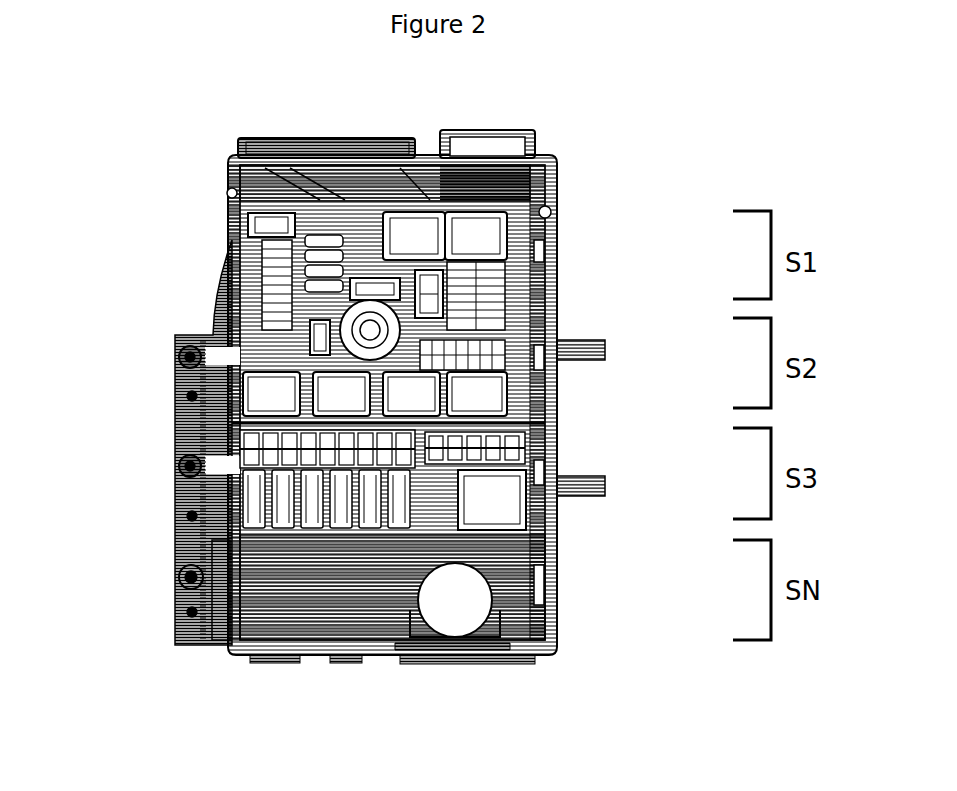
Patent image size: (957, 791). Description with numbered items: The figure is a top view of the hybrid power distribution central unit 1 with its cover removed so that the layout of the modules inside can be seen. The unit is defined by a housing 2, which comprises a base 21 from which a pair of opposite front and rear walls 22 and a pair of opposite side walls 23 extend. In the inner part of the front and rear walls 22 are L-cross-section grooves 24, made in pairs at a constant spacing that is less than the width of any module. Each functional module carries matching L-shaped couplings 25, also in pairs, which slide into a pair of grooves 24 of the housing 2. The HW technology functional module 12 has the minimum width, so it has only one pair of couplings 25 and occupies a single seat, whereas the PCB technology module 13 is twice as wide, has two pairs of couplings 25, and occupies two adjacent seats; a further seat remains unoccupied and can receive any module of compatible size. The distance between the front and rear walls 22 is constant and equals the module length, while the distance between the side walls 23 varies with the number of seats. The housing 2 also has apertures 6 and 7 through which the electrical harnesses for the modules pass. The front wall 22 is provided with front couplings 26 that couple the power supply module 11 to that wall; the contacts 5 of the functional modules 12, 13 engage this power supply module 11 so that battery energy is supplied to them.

The hybrid power distribution central unit 1 is at (381, 397).
The housing 2 is at (552, 652).
The contacts 5 is at (218, 358).
The aperture 6 is at (455, 605).
The aperture 7 is at (258, 138).
The power supply module 11 is at (185, 548).
The HW technology functional module 12 is at (530, 500).
The PCB technology module 13 is at (525, 390).
The base 21 is at (300, 603).
The front and rear walls 22 is at (232, 248).
The side walls 23 is at (432, 165).
The grooves 24 is at (233, 193).
The couplings 25 is at (548, 297).
The front couplings 26 is at (232, 568).